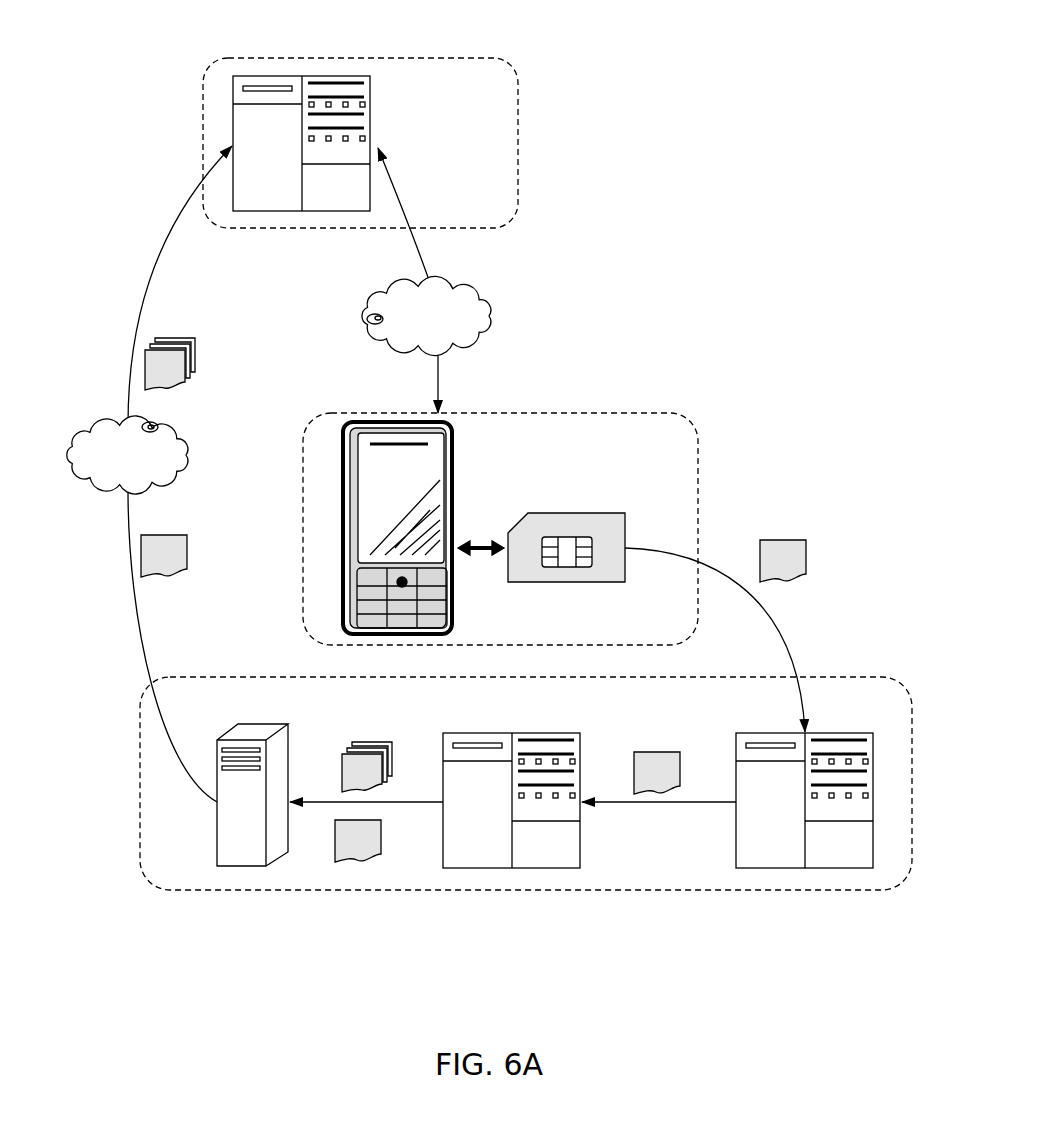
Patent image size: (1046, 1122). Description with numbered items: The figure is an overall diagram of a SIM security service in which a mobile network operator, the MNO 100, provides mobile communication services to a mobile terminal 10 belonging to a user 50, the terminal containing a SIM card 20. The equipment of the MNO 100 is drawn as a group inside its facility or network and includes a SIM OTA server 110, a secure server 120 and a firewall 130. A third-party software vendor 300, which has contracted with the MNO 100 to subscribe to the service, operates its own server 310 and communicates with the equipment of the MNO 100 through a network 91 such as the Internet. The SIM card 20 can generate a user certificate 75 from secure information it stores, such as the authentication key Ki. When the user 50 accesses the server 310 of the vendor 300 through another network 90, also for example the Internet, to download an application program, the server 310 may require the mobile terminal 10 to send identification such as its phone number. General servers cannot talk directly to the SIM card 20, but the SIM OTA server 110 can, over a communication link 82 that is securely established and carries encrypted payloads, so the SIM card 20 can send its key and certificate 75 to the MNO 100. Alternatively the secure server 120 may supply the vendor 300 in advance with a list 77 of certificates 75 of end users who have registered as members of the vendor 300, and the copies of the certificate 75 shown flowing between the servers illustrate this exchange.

The mobile terminal 10 is at (490, 507).
The SIM card 20 is at (622, 503).
The user 50 is at (700, 418).
The user certificate 75 is at (193, 536).
The list of certificates 77 is at (210, 346).
The communication link 82 is at (782, 632).
The network 90 is at (515, 303).
The network 91 is at (108, 495).
The MNO 100 is at (248, 677).
The SIM OTA server 110 is at (825, 870).
The secure server 120 is at (535, 870).
The firewall 130 is at (247, 870).
The software vendor 300 is at (525, 86).
The server 310 is at (380, 75).